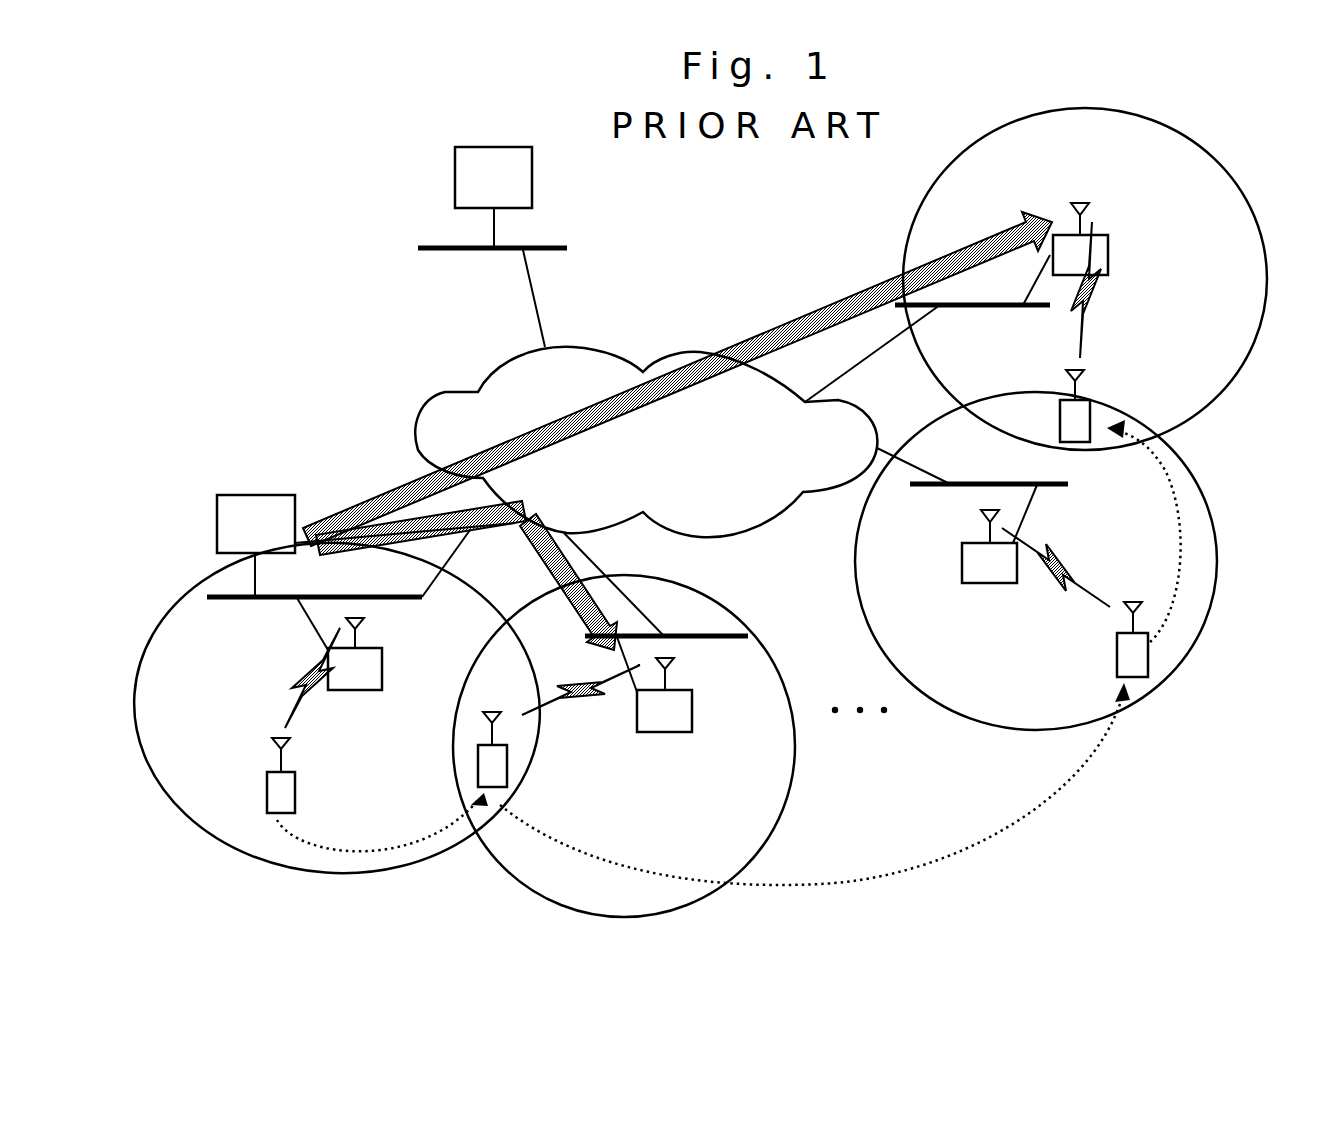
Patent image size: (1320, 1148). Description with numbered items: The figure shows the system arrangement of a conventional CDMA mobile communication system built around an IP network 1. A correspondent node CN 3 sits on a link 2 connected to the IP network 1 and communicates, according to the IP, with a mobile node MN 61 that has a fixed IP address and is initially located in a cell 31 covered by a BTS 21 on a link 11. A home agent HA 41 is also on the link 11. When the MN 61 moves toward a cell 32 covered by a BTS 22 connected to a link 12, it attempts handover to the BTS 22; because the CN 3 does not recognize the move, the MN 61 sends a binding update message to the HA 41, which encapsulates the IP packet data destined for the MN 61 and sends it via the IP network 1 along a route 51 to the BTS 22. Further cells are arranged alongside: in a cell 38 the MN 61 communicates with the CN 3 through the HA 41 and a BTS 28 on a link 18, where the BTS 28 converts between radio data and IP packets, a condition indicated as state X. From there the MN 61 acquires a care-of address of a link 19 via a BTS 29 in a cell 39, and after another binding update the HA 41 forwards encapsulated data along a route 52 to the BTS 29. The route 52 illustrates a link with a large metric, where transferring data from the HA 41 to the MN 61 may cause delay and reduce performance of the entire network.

The IP network 1 is at (445, 392).
The link 2 is at (548, 248).
The CN 3 is at (532, 181).
The link 11 is at (257, 597).
The link 12 is at (688, 636).
The link 18 is at (1050, 483).
The link 19 is at (935, 305).
The BTS 21 is at (355, 692).
The BTS 22 is at (655, 733).
The BTS 28 is at (978, 583).
The BTS 29 is at (1108, 255).
The cell 31 is at (180, 813).
The cell 32 is at (615, 917).
The cell 38 is at (1180, 667).
The cell 39 is at (1252, 208).
The HA 41 is at (217, 512).
The route 51 is at (505, 528).
The route 52 is at (766, 333).
The MN 61 is at (267, 780).